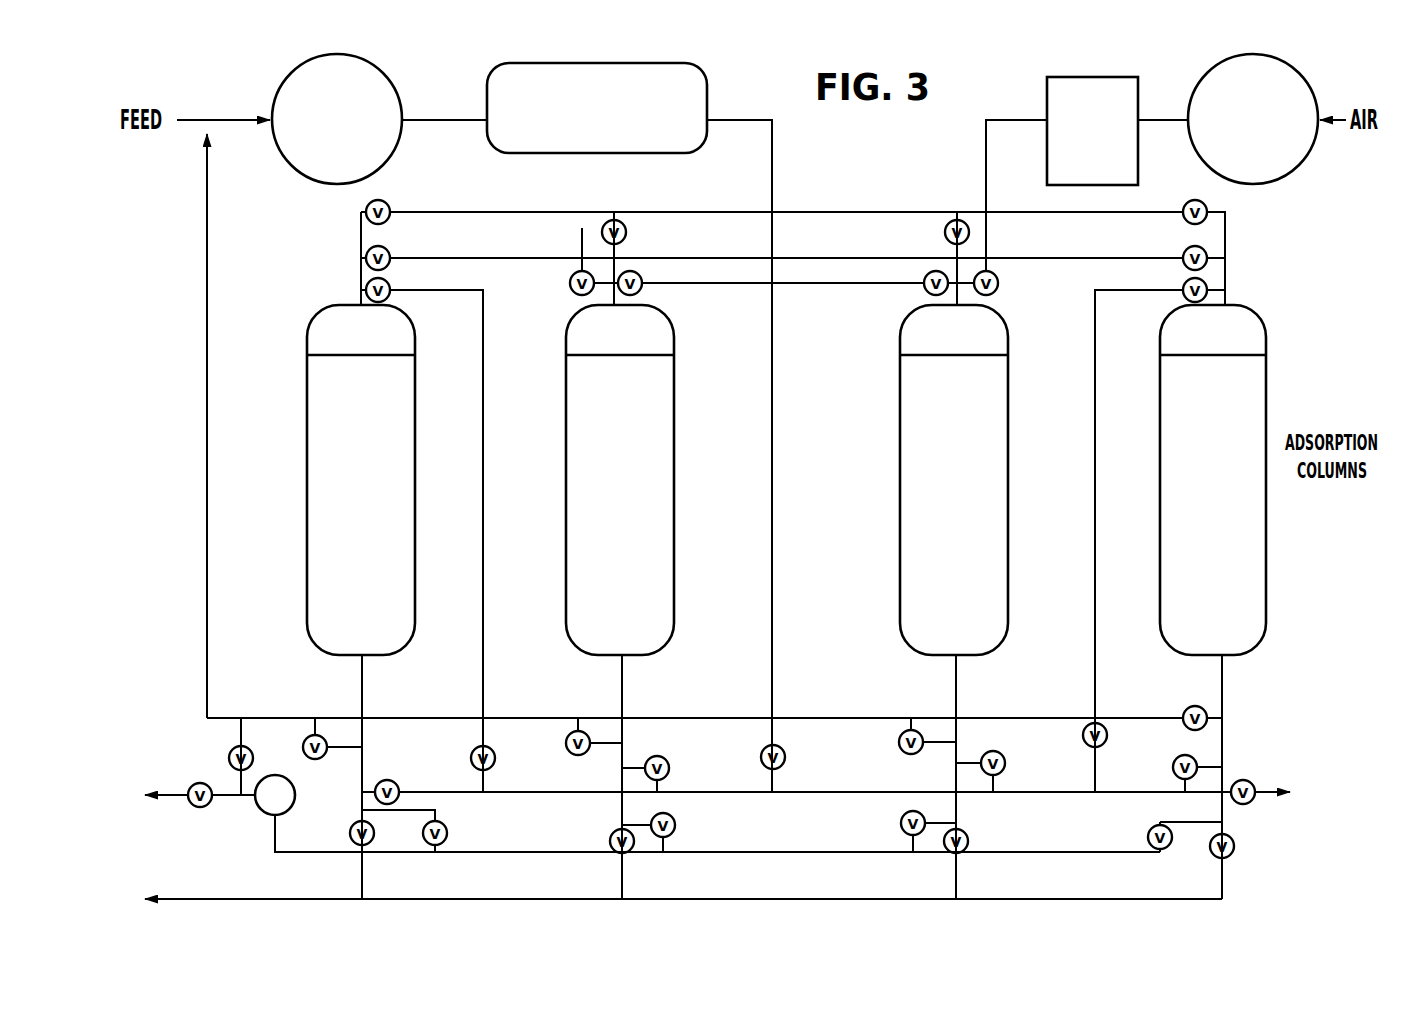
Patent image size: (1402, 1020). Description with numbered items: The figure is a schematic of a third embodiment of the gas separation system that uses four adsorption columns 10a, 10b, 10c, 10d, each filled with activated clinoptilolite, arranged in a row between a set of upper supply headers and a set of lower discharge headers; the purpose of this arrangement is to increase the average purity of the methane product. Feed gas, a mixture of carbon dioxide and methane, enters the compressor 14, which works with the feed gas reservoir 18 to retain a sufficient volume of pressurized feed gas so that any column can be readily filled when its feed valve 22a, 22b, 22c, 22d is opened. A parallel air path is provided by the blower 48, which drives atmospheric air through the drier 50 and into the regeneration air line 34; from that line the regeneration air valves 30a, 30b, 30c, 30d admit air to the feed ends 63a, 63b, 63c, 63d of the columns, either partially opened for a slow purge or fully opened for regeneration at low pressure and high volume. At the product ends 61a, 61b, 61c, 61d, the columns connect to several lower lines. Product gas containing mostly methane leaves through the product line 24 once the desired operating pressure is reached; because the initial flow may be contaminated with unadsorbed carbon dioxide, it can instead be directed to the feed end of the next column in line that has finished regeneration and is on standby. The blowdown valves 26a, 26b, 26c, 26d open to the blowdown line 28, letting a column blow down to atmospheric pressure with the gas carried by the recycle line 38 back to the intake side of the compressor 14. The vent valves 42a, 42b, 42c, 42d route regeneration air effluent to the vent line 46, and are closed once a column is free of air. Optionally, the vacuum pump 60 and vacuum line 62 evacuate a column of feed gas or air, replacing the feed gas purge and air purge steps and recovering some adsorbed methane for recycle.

The compressor 14 is at (337, 119).
The feed gas reservoir 18 is at (597, 108).
The drier 50 is at (1092, 131).
The blower 48 is at (1253, 119).
The regeneration air line 34 is at (984, 182).
The feed valve 22a is at (390, 200).
The feed valve 22b is at (626, 232).
The feed valve 22c is at (943, 232).
The feed valve 22d is at (1205, 200).
The regeneration air valve 30a is at (390, 252).
The regeneration air valve 30b is at (570, 283).
The regeneration air valve 30c is at (998, 284).
The regeneration air valve 30d is at (1184, 252).
The adsorption column 10a is at (361, 480).
The adsorption column 10b is at (620, 480).
The adsorption column 10c is at (954, 480).
The adsorption column 10d is at (1213, 480).
The feed end 63a is at (298, 345).
The feed end 63b is at (678, 351).
The feed end 63c is at (885, 350).
The feed end 63d is at (1278, 349).
The product end 61a is at (298, 658).
The product end 61b is at (564, 656).
The product end 61c is at (890, 656).
The product end 61d is at (1280, 652).
The recycle line 38 is at (197, 444).
The blowdown line 28 is at (740, 718).
The blowdown valve 26a is at (302, 736).
The blowdown valve 26b is at (572, 752).
The blowdown valve 26c is at (899, 742).
The blowdown valve 26d is at (1184, 706).
The product line 24 is at (801, 792).
The vacuum pump 60 is at (256, 812).
The vacuum line 62 is at (472, 850).
The vent valve 42a is at (352, 829).
The vent valve 42b is at (610, 838).
The vent valve 42c is at (969, 838).
The vent valve 42d is at (1235, 846).
The vent line 46 is at (503, 900).